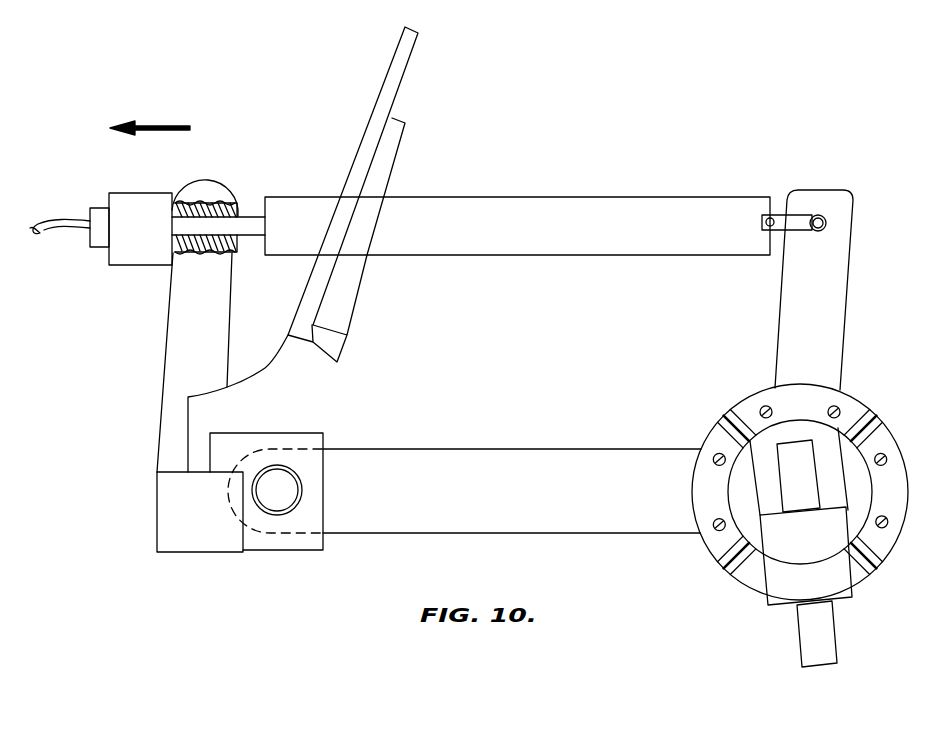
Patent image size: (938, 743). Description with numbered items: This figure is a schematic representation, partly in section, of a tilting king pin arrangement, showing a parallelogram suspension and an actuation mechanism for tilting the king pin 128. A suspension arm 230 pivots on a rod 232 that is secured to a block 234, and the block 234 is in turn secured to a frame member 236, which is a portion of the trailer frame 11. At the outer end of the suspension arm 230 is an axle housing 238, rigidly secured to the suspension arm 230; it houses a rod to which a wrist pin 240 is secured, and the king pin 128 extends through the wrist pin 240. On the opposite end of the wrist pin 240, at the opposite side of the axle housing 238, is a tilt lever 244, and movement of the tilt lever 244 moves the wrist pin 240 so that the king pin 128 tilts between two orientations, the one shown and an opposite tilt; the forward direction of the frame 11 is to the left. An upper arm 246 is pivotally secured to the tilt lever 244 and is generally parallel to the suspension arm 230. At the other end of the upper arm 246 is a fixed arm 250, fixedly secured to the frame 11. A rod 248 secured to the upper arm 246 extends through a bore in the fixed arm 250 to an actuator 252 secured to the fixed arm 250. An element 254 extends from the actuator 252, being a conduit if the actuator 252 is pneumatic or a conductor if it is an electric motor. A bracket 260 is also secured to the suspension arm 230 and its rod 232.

The trailer frame 11 is at (157, 510).
The king pin 128 is at (797, 642).
The suspension arm 230 is at (540, 449).
The rod 232 is at (292, 508).
The block 234 is at (313, 442).
The frame member 236 is at (157, 535).
The axle housing 238 is at (738, 400).
The wrist pin 240 is at (777, 593).
The tilt lever 244 is at (780, 306).
The upper arm 246 is at (524, 197).
The rod 248 is at (245, 216).
The fixed arm 250 is at (166, 360).
The actuator 252 is at (138, 193).
The element 254 is at (73, 233).
The bracket 260 is at (355, 290).